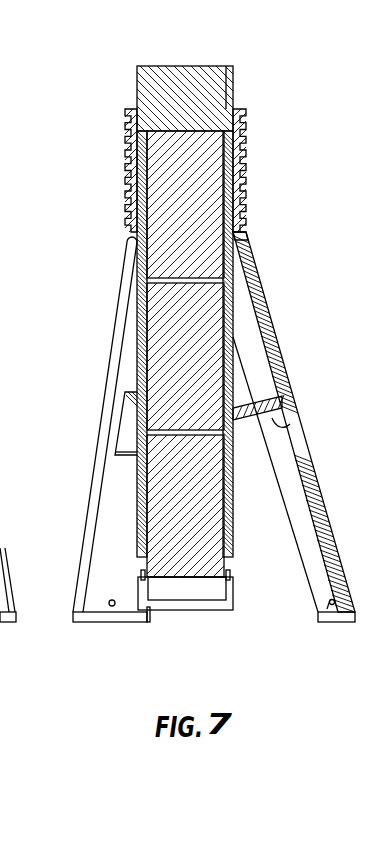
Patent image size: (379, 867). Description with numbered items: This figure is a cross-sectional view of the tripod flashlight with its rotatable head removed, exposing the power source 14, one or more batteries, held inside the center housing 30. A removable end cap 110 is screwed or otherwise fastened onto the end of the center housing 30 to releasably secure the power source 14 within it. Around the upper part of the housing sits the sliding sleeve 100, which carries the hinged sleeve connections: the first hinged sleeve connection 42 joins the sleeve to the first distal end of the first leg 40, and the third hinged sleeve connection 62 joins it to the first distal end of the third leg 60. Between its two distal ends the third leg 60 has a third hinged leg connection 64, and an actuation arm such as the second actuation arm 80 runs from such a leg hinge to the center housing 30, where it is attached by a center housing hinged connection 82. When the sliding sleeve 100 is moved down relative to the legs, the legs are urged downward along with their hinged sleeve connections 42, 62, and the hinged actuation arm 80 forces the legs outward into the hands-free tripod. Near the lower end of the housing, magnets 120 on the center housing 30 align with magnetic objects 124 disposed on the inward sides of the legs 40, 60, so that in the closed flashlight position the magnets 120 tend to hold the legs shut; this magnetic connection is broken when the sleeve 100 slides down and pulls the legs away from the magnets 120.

The sliding sleeve 100 is at (246, 165).
The power source 14 is at (245, 224).
The third hinged sleeve connection 62 is at (240, 236).
The first hinged sleeve connection 42 is at (125, 242).
The first leg 40 is at (93, 473).
The third hinged leg connection 64 is at (282, 400).
The second actuation arm 80 is at (277, 428).
The second center housing hinged connection 82 is at (234, 425).
The third leg 60 is at (330, 534).
The center housing 30 is at (138, 540).
The magnets 120 is at (231, 577).
The magnetic objects 124 is at (105, 606).
The removable end cap 110 is at (143, 600).